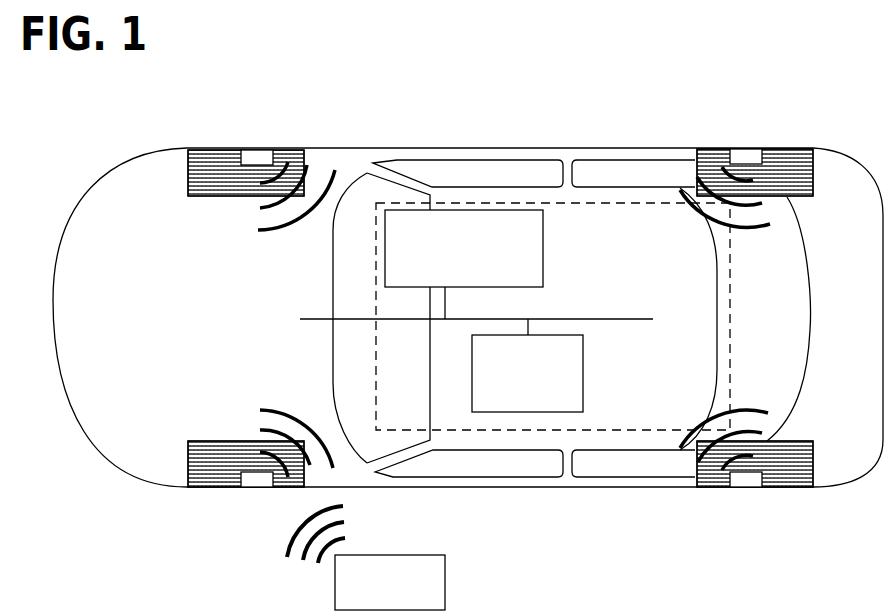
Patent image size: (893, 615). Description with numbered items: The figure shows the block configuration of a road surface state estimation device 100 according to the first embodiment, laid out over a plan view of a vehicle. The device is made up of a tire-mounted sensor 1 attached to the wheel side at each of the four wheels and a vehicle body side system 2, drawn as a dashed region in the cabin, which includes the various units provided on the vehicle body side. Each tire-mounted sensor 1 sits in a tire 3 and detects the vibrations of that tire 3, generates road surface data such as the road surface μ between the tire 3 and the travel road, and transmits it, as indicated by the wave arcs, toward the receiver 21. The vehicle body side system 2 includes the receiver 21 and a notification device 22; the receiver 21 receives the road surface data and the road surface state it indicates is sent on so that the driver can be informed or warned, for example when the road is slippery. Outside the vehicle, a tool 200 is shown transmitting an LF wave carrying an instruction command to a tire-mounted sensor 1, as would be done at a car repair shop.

The tire-mounted sensor 1 is at (255, 160).
The vehicle body side system 2 is at (663, 203).
The tire 3 is at (187, 173).
The receiver 21 is at (543, 412).
The notification device 22 is at (455, 208).
The road surface state estimation device 100 is at (386, 124).
The tool 200 is at (447, 582).